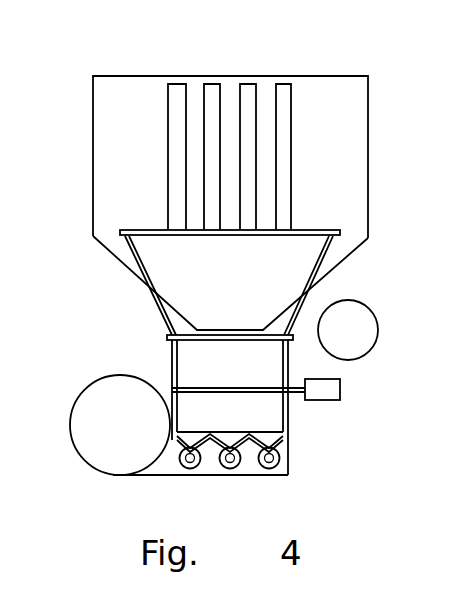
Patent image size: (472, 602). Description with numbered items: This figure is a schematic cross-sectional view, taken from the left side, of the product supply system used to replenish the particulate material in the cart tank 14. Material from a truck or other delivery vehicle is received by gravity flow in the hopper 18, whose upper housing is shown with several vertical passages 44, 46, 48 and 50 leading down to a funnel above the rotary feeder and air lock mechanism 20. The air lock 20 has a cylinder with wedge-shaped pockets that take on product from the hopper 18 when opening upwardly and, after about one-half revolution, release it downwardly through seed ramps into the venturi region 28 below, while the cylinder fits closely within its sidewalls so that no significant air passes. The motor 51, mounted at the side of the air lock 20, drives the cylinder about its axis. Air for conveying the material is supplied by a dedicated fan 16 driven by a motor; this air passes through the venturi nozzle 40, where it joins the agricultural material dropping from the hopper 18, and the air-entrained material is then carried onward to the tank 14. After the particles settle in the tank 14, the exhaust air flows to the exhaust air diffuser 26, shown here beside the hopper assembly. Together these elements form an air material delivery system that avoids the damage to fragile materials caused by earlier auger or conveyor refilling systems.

The tank 14 is at (103, 76).
The fan 16 is at (75, 446).
The hopper 18 is at (154, 300).
The rotary feeder and air lock mechanism 20 is at (172, 368).
The exhaust air diffuser 26 is at (375, 345).
The venturi region 28 is at (250, 450).
The venturi nozzle 40 is at (269, 469).
The tube 44 is at (170, 106).
The tube 46 is at (212, 90).
The tube 48 is at (249, 92).
The tube 50 is at (288, 110).
The motor 51 is at (330, 390).